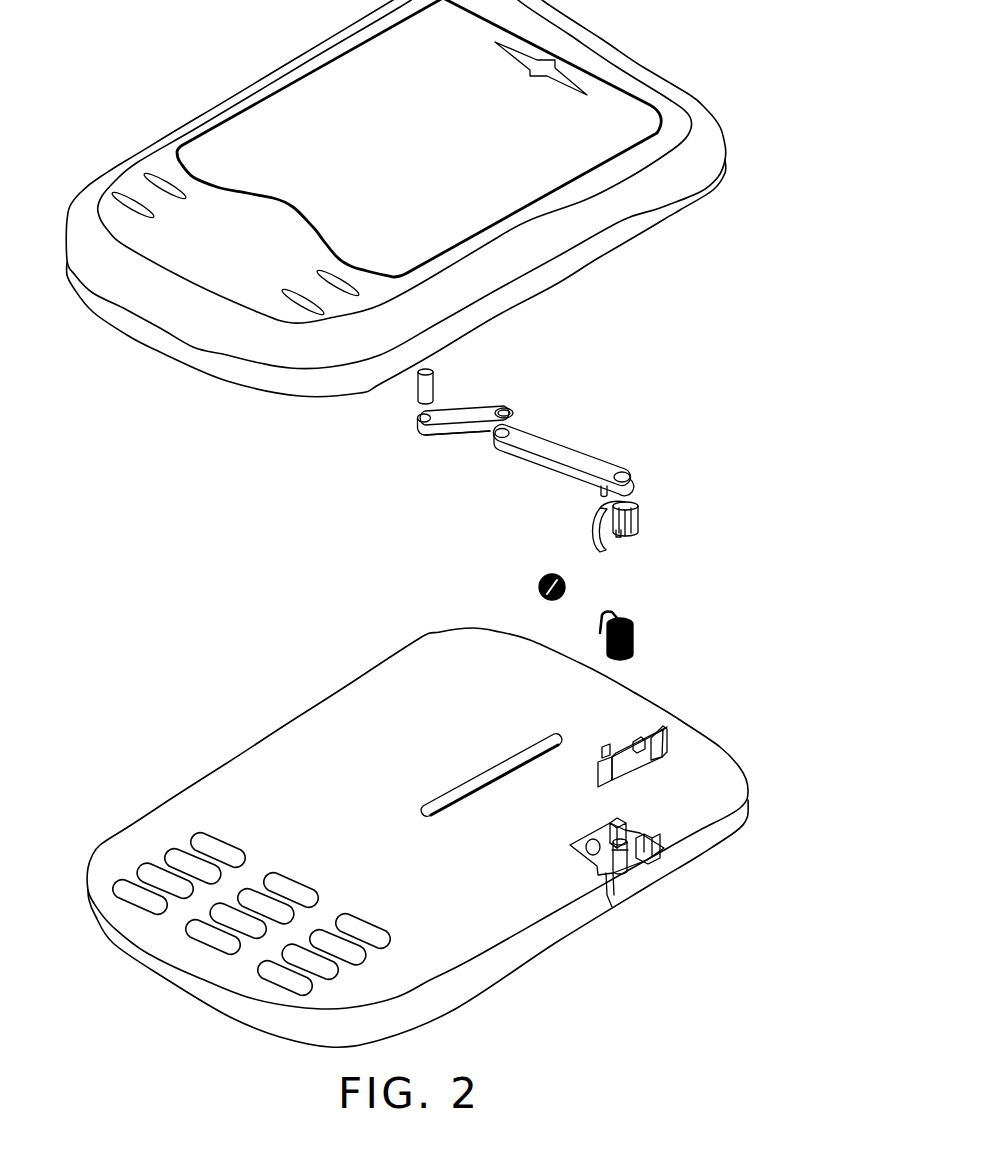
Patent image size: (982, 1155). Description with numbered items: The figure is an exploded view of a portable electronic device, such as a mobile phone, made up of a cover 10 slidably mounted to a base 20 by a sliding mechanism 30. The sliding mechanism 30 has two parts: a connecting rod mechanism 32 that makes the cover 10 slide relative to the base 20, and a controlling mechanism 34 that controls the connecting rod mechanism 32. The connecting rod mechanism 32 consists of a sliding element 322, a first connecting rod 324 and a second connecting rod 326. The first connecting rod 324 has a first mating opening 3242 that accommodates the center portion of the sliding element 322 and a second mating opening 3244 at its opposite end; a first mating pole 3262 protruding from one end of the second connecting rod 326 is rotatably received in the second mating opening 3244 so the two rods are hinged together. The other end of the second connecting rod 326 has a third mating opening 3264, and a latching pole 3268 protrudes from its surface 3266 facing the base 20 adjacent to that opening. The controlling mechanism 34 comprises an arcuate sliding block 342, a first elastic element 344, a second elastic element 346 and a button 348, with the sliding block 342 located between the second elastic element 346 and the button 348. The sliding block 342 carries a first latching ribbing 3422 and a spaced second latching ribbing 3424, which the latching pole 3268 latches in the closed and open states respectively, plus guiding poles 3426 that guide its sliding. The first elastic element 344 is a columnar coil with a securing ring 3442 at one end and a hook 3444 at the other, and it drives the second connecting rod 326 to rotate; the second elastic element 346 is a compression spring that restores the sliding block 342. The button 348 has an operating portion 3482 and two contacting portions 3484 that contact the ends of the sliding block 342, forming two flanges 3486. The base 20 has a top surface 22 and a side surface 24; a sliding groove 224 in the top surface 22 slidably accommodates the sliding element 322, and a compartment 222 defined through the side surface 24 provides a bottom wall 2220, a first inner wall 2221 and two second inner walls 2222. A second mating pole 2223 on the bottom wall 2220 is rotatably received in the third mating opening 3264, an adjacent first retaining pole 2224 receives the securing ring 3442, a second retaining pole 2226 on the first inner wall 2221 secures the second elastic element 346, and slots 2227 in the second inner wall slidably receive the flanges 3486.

The cover 10 is at (704, 118).
The base 20 is at (145, 785).
The top surface 22 is at (290, 767).
The side surface 24 is at (487, 970).
The sliding mechanism 30 is at (705, 383).
The connecting rod mechanism 32 is at (561, 320).
The controlling mechanism 34 is at (792, 478).
The compartment 222 is at (660, 860).
The sliding groove 224 is at (507, 767).
The sliding element 322 is at (427, 382).
The first connecting rod 324 is at (459, 410).
The second connecting rod 326 is at (556, 464).
The sliding block 342 is at (650, 508).
The first elastic element 344 is at (642, 625).
The second elastic element 346 is at (565, 580).
The button 348 is at (652, 720).
The bottom wall 2220 is at (628, 868).
The first inner wall 2221 is at (612, 825).
The second inner walls 2222 is at (622, 830).
The second mating pole 2223 is at (618, 865).
The first retaining pole 2224 is at (627, 866).
The second retaining pole 2226 is at (590, 843).
The slots 2227 is at (623, 868).
The first mating opening 3242 is at (417, 418).
The second mating opening 3244 is at (484, 426).
The first mating pole 3262 is at (496, 438).
The third mating opening 3264 is at (617, 476).
The surface 3266 is at (528, 460).
The latching pole 3268 is at (553, 498).
The first latching ribbing 3422 is at (597, 512).
The second latching ribbing 3424 is at (634, 525).
The guiding poles 3426 is at (618, 533).
The securing ring 3442 is at (634, 644).
The hook 3444 is at (597, 615).
The operating portion 3482 is at (643, 760).
The contacting portions 3484 is at (605, 748).
The flanges 3486 is at (637, 780).